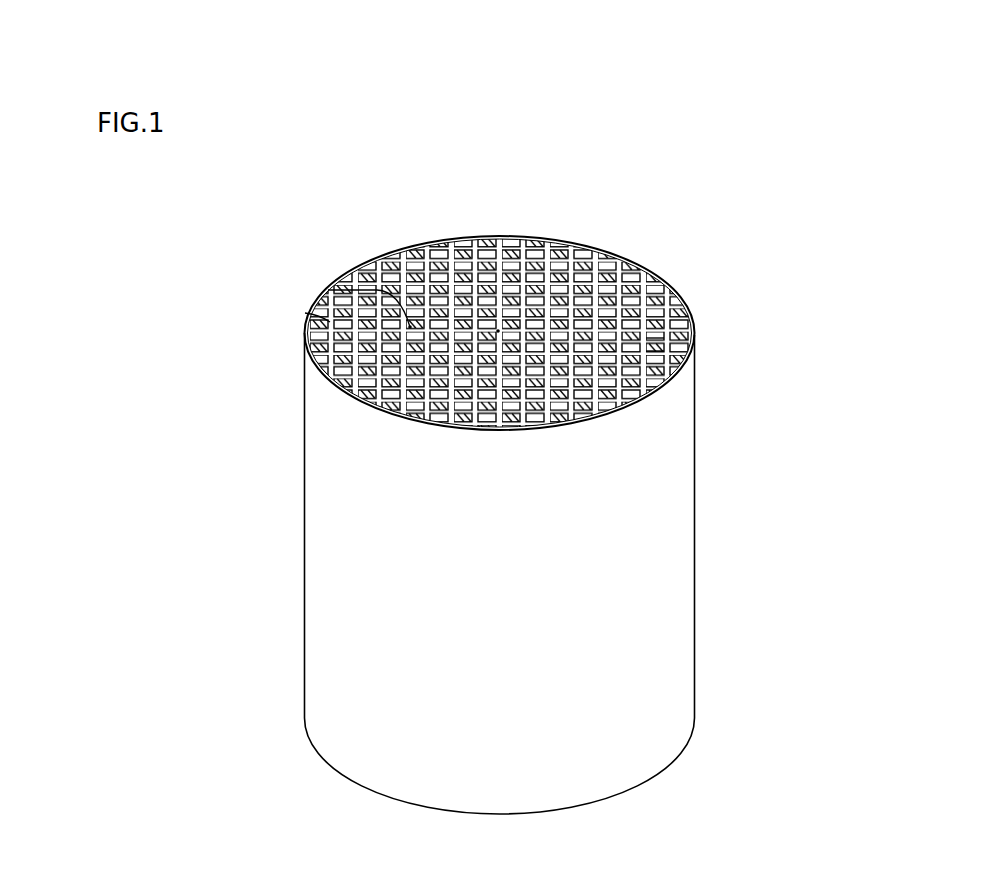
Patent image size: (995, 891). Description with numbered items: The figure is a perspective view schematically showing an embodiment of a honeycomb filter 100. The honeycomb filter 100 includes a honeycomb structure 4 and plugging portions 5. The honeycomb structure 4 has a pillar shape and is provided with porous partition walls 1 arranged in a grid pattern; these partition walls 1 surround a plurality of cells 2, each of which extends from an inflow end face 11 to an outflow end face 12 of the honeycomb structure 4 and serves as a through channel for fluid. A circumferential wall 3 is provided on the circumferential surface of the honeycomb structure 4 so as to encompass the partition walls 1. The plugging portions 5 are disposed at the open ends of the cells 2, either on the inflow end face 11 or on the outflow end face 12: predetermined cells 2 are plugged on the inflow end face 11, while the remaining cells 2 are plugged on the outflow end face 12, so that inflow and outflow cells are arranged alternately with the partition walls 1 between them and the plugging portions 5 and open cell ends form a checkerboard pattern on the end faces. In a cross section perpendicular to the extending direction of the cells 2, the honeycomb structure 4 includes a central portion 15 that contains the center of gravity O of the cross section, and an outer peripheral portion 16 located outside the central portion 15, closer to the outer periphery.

The honeycomb filter 100 is at (795, 122).
The partition walls 1 is at (570, 283).
The cells 2 is at (653, 338).
The circumferential wall 3 is at (663, 465).
The honeycomb structure 4 is at (709, 405).
The plugging portions 5 is at (511, 251).
The inflow end face 11 is at (377, 250).
The outflow end face 12 is at (328, 778).
The central portion 15 is at (328, 290).
The outer peripheral portion 16 is at (305, 313).
The center of gravity O is at (497, 330).